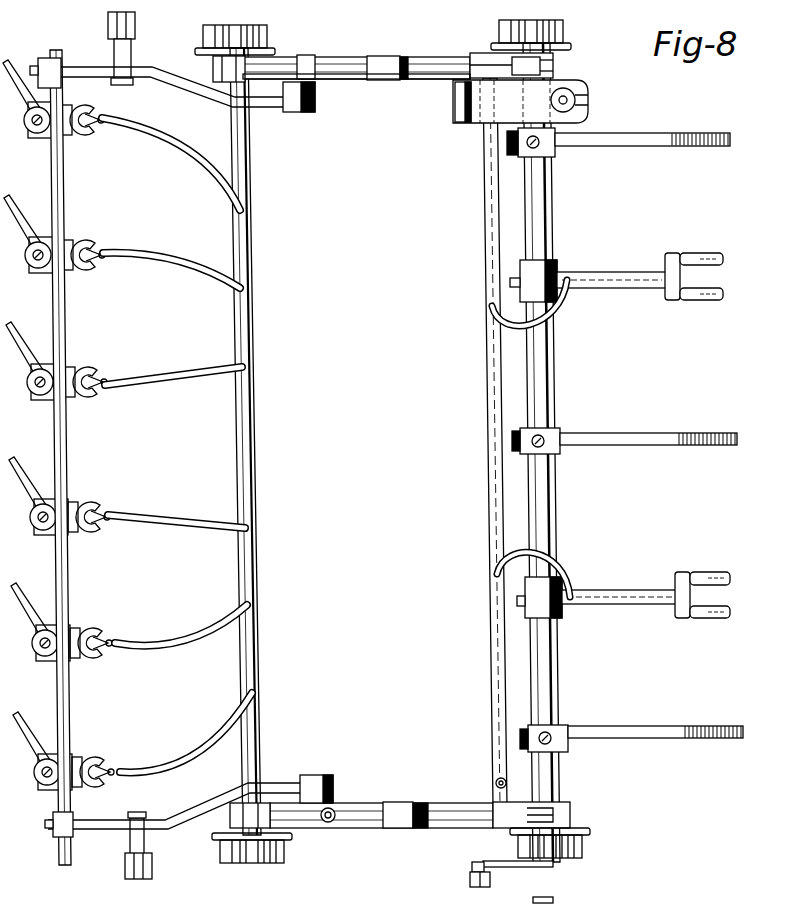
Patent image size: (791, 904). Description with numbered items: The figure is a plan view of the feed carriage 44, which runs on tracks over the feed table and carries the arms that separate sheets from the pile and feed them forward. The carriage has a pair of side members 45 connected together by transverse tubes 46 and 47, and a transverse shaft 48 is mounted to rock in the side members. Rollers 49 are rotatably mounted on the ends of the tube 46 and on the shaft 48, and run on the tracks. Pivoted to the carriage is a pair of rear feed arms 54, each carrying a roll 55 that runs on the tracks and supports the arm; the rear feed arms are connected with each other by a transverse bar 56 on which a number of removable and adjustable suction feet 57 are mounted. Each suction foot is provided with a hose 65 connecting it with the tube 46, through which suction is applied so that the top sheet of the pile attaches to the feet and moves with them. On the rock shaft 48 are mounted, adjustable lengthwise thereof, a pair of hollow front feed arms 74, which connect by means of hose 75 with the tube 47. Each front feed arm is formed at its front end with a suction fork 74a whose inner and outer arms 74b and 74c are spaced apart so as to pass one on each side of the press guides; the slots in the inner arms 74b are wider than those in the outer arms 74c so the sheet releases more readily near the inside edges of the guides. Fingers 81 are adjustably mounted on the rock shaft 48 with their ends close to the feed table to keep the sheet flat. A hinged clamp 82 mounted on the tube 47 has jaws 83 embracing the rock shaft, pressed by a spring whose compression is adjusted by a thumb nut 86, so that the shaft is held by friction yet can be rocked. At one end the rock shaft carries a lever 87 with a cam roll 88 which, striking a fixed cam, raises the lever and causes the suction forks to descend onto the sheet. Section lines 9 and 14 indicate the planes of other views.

The section line 9- 9 is at (432, 97).
The section line 14- 14 is at (702, 546).
The feed carriage 44 is at (348, 80).
The side members 45 is at (342, 57).
The transverse tube 46 is at (257, 557).
The transverse tube 47 is at (492, 517).
The transverse shaft 48 is at (551, 182).
The rollers 49 is at (270, 30).
The rear feed arms 54 is at (192, 92).
The roll 55 is at (135, 23).
The transverse bar 56 is at (60, 466).
The suction feet 57 is at (67, 138).
The hose 65 is at (193, 157).
The front feed arms 74 is at (598, 287).
The suction fork 74a is at (660, 270).
The inner arm of fork 74b is at (725, 300).
The outer arm of fork 74c is at (708, 250).
The hose 75 is at (562, 302).
The fingers 81 is at (660, 140).
The hinged clamp 82 is at (457, 123).
The jaw 83 is at (537, 92).
The thumb nut 86 is at (587, 100).
The lever 87 is at (510, 870).
The cam roll 88 is at (467, 878).